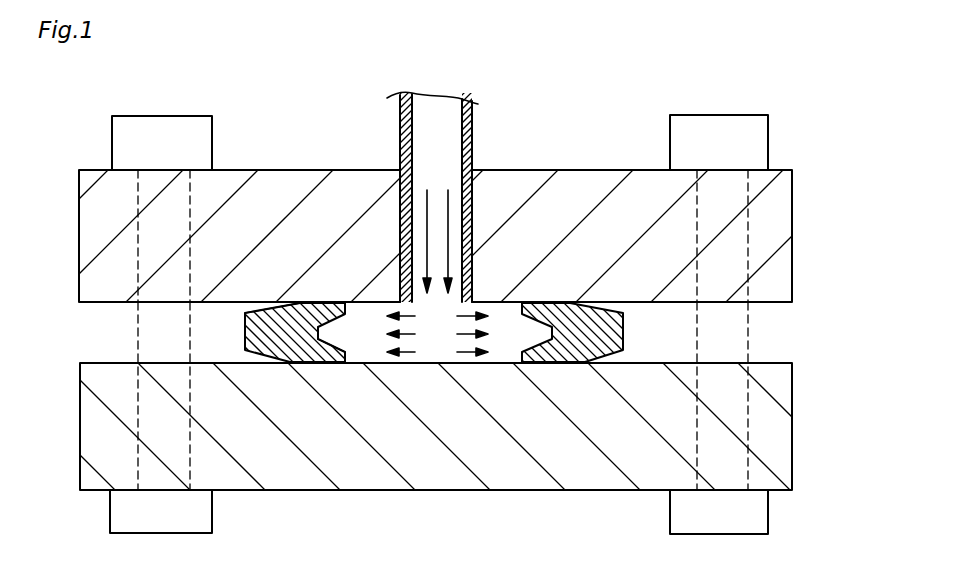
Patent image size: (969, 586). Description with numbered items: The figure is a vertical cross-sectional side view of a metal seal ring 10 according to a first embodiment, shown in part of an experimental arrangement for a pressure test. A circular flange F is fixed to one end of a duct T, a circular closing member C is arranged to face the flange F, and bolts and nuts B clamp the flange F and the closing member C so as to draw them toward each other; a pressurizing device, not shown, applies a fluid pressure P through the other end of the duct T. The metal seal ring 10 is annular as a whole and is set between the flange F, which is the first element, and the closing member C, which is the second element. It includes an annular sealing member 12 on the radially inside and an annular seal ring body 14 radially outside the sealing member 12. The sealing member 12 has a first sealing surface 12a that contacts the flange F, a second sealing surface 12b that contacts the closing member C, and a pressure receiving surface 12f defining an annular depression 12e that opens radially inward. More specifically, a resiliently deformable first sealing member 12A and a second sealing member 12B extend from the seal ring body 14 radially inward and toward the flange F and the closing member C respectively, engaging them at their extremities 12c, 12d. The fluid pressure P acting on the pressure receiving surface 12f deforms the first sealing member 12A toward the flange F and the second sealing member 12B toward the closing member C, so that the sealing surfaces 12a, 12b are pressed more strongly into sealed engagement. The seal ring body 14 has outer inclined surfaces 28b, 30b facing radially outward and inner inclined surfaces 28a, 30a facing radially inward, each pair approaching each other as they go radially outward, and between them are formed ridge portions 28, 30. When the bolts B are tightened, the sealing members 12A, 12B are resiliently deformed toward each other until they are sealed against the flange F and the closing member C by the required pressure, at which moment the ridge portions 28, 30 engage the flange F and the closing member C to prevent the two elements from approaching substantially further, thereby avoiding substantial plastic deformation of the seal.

The metal seal ring 10 is at (355, 333).
The sealing member 12 is at (557, 365).
The first sealing member 12A is at (342, 311).
The second sealing member 12B is at (326, 374).
The first sealing surface 12a is at (548, 302).
The second sealing surface 12b is at (553, 363).
The extremity of first sealing member 12c is at (328, 292).
The extremity of second sealing member 12d is at (347, 363).
The annular depression 12e is at (342, 333).
The pressure receiving surface 12f is at (290, 302).
The seal ring body 14 is at (255, 374).
The ridge portion 28 is at (287, 302).
The inner inclined surface 28a is at (562, 302).
The outer inclined surface 28b is at (612, 302).
The ridge portion 30 is at (291, 363).
The inner inclined surface 30a is at (570, 390).
The outer inclined surface 30b is at (608, 363).
The bolts and nuts B is at (166, 122).
The duct T is at (478, 104).
The flange F is at (793, 244).
The closing member C is at (793, 432).
The fluid pressure P is at (404, 352).